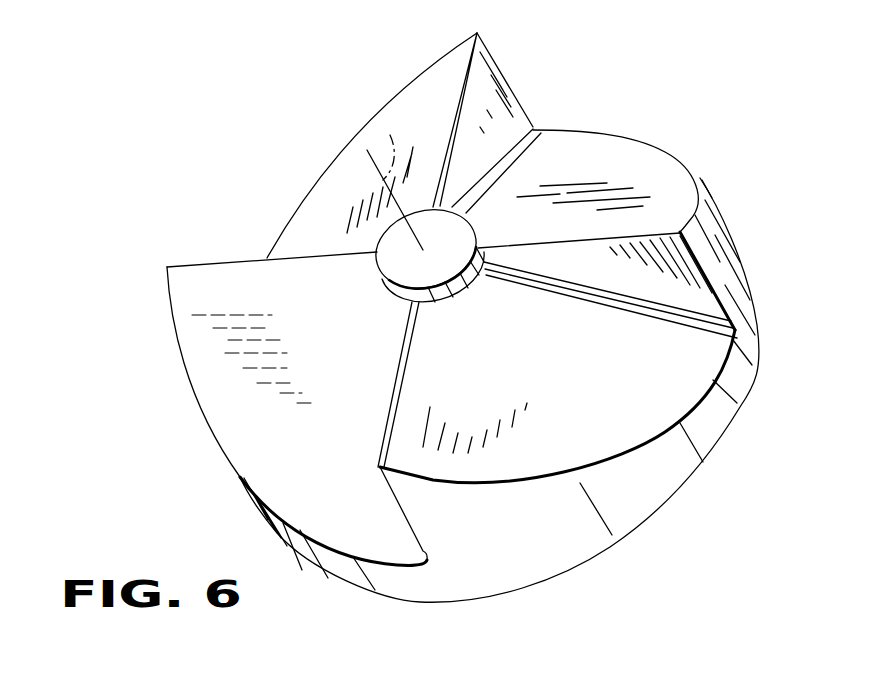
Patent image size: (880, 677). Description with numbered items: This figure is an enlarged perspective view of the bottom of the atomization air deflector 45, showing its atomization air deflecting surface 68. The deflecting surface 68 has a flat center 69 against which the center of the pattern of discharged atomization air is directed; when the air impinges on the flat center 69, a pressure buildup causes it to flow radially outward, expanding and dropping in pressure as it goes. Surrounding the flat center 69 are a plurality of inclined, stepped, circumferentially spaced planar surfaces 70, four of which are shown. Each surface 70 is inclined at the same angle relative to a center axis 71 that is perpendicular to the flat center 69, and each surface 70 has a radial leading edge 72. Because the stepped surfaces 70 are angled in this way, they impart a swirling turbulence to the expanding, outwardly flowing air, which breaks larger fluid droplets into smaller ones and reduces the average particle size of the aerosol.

The atomization air deflector 45 is at (646, 138).
The atomization air deflecting surface 68 is at (217, 342).
The flat center 69 is at (393, 270).
The inclined stepped planar surfaces 70 is at (328, 188).
The center axis 71 is at (390, 135).
The radial leading edge 72 is at (465, 85).